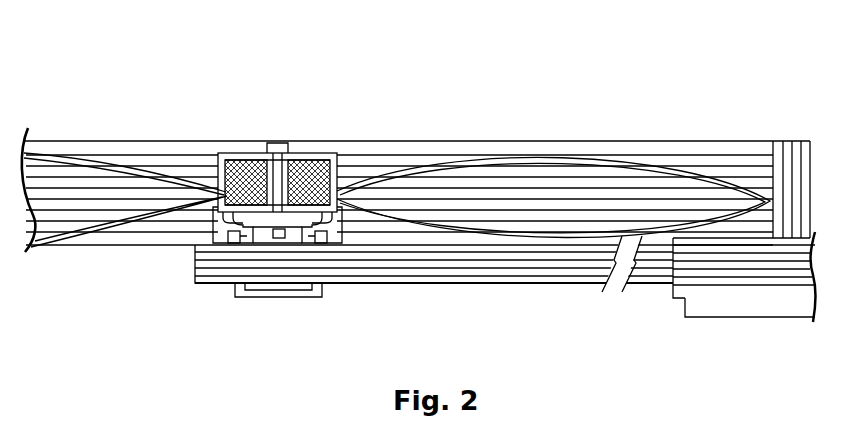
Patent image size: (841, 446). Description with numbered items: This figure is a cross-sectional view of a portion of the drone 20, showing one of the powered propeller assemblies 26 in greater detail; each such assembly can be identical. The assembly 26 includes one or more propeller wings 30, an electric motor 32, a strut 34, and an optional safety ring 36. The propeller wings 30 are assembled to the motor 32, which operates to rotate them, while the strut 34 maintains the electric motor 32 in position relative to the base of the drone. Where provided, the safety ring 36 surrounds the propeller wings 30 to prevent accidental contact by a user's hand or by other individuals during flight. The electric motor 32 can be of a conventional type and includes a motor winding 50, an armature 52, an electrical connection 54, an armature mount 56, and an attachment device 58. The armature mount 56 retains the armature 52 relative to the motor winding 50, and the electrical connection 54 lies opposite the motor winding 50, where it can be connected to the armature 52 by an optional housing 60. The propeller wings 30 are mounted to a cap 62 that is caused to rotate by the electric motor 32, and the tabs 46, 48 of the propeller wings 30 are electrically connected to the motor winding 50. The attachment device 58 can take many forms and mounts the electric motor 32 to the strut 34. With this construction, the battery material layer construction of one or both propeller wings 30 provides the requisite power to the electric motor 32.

The drone 20 is at (754, 62).
The powered propeller assembly 26 is at (266, 75).
The propeller wing 30 is at (42, 139).
The electric motor 32 is at (311, 132).
The strut 34 is at (498, 287).
The safety ring 36 is at (131, 140).
The tab 46 is at (231, 186).
The tab 48 is at (345, 195).
The motor winding 50 is at (217, 232).
The armature 52 is at (280, 142).
The electrical connection 54 is at (329, 233).
The armature mount 56 is at (293, 246).
The attachment device 58 is at (265, 302).
The housing 60 is at (244, 195).
The cap 62 is at (335, 152).